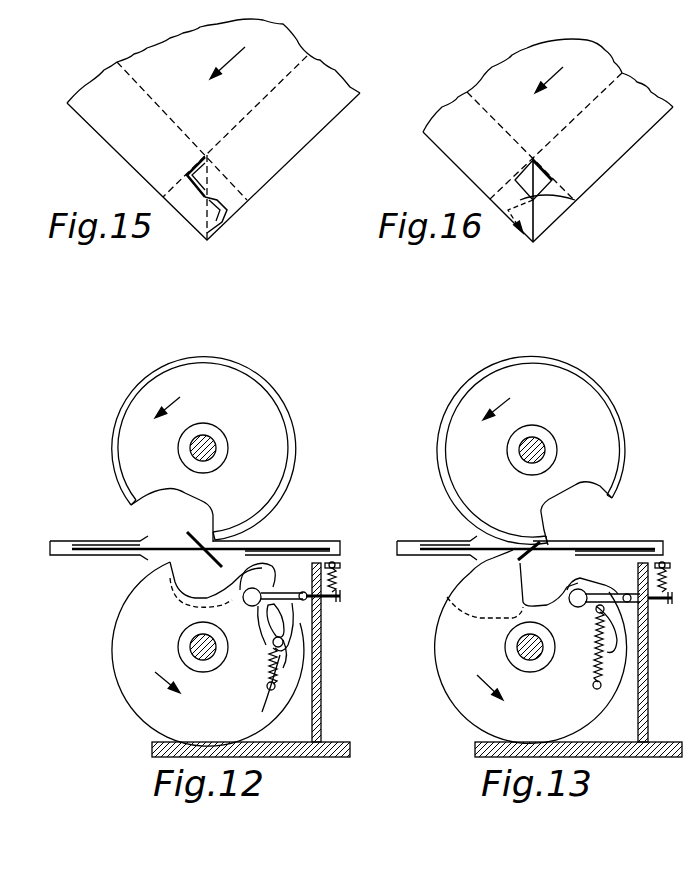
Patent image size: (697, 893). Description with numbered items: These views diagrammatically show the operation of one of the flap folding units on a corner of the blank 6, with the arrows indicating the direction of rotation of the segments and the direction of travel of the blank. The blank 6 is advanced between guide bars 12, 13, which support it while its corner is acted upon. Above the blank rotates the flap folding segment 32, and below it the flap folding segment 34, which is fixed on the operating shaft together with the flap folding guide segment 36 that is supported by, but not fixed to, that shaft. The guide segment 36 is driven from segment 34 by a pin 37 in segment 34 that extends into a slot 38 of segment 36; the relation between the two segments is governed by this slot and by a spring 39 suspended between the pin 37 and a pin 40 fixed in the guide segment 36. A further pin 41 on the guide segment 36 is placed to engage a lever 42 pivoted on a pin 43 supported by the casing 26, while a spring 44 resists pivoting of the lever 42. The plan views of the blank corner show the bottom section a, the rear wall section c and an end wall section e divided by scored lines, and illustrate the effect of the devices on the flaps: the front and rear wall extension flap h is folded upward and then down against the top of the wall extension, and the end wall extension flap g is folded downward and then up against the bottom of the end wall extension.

In FIG. 12, the blank 6 is at (83, 548).
In FIG. 13, the blank 6 is at (435, 553).
In FIG. 12, the guide bar 12 is at (303, 541).
In FIG. 13, the guide bar 12 is at (620, 547).
In FIG. 12, the guide bar 13 is at (67, 556).
In FIG. 13, the guide bar 13 is at (403, 543).
In FIG. 12, the casing 26 is at (322, 718).
In FIG. 13, the casing 26 is at (648, 690).
In FIG. 12, the flap folding segment 32 is at (140, 388).
In FIG. 13, the flap folding segment 32 is at (468, 390).
In FIG. 12, the flap folding segment 34 is at (258, 568).
In FIG. 13, the flap folding segment 34 is at (619, 615).
In FIG. 12, the flap folding guide segment 36 is at (133, 582).
In FIG. 13, the flap folding guide segment 36 is at (531, 653).
In FIG. 12, the pin 37 is at (257, 673).
In FIG. 12, the slot 38 is at (262, 635).
In FIG. 12, the spring 39 is at (278, 660).
In FIG. 13, the spring 39 is at (598, 647).
In FIG. 12, the pin 40 is at (262, 713).
In FIG. 12, the pin 41 is at (245, 602).
In FIG. 12, the lever 42 is at (327, 602).
In FIG. 12, the pin 43 is at (322, 613).
In FIG. 12, the spring 44 is at (337, 580).
In FIG. 13, the spring 44 is at (662, 577).
In FIG. 15, the bottom section a is at (187, 50).
In FIG. 16, the bottom section a is at (520, 75).
In FIG. 15, the rear wall section c is at (276, 120).
In FIG. 16, the rear wall section c is at (605, 123).
In FIG. 15, the end wall section e is at (137, 129).
In FIG. 16, the end wall section e is at (471, 141).
In FIG. 15, the end wall extension flap g is at (222, 220).
In FIG. 16, the end wall extension flap g is at (527, 220).
In FIG. 12, the end wall extension flap g is at (204, 557).
In FIG. 13, the end wall extension flap g is at (470, 572).
In FIG. 15, the front and rear wall extension flap h is at (203, 176).
In FIG. 16, the front and rear wall extension flap h is at (545, 172).
In FIG. 12, the front and rear wall extension flap h is at (197, 537).
In FIG. 13, the front and rear wall extension flap h is at (547, 537).